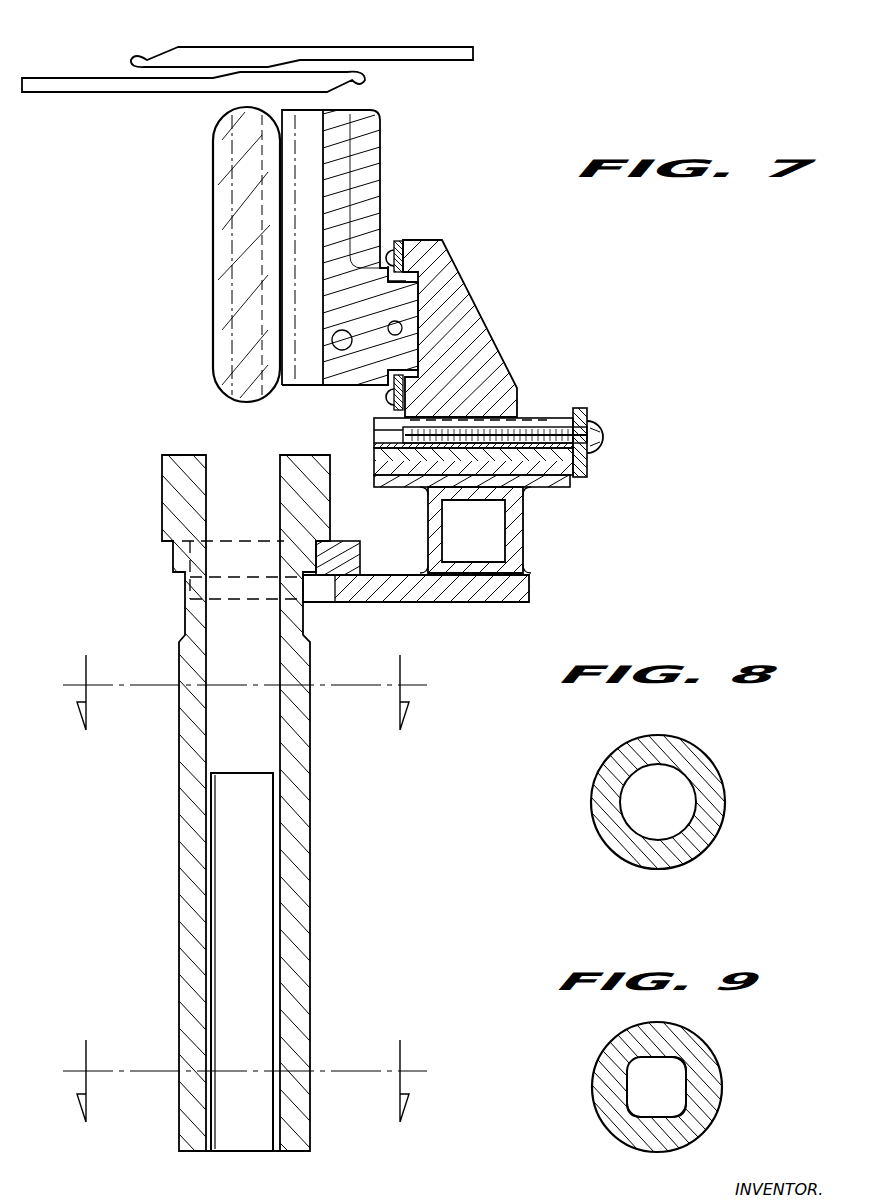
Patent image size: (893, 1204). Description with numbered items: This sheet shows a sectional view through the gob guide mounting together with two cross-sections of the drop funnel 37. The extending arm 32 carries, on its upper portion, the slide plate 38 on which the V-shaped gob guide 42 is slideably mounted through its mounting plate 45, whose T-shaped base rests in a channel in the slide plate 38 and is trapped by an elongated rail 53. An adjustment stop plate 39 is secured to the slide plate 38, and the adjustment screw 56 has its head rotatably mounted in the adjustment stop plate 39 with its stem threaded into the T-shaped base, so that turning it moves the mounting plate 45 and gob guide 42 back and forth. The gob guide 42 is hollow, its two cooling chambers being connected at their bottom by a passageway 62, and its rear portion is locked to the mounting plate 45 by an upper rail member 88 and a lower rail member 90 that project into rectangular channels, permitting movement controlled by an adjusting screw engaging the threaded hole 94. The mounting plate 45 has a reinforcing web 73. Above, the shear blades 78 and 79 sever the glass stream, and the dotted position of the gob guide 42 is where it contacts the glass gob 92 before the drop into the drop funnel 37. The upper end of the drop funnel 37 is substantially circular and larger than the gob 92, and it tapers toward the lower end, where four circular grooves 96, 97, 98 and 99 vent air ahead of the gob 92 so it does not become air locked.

In FIG. 7, the extending arm 32 is at (522, 542).
In FIG. 7, the drop funnel 37 is at (183, 879).
In FIG. 8, the drop funnel 37 is at (713, 787).
In FIG. 9, the drop funnel 37 is at (593, 1087).
In FIG. 7, the slide plate 38 is at (574, 487).
In FIG. 7, the adjustment stop plate 39 is at (590, 409).
In FIG. 7, the V-shaped gob guide 42 is at (381, 140).
In FIG. 7, the mounting plate 45 is at (438, 241).
In FIG. 7, the elongated rail 53 is at (534, 416).
In FIG. 7, the adjustment screw 56 is at (606, 440).
In FIG. 7, the passageway 62 is at (334, 342).
In FIG. 7, the reinforcing web 73 is at (444, 417).
In FIG. 7, the shear blade 78 is at (82, 36).
In FIG. 7, the shear blade 79 is at (450, 10).
In FIG. 7, the upper rail member 88 is at (396, 244).
In FIG. 7, the lower rail member 90 is at (387, 405).
In FIG. 7, the glass gob 92 is at (216, 190).
In FIG. 7, the threaded hole 94 is at (403, 328).
In FIG. 9, the circular groove 96 is at (623, 1053).
In FIG. 9, the circular groove 97 is at (677, 1060).
In FIG. 9, the circular groove 98 is at (680, 1112).
In FIG. 9, the circular groove 99 is at (624, 1113).